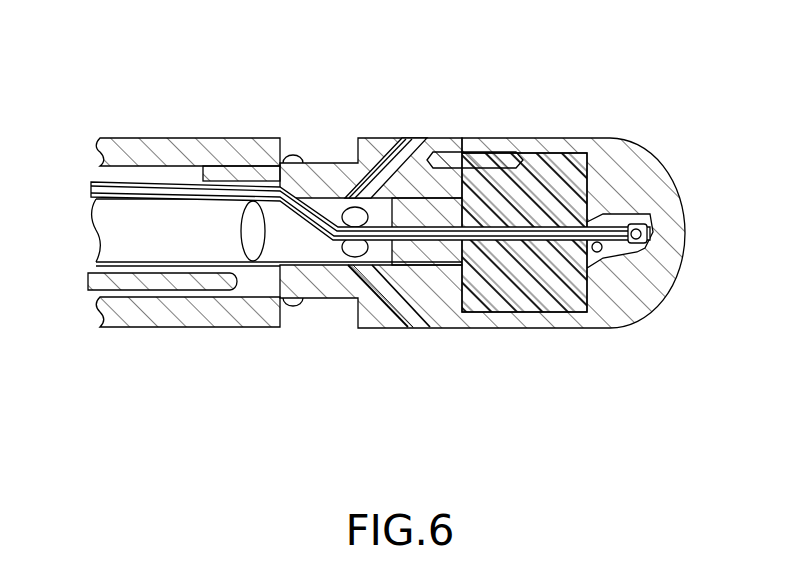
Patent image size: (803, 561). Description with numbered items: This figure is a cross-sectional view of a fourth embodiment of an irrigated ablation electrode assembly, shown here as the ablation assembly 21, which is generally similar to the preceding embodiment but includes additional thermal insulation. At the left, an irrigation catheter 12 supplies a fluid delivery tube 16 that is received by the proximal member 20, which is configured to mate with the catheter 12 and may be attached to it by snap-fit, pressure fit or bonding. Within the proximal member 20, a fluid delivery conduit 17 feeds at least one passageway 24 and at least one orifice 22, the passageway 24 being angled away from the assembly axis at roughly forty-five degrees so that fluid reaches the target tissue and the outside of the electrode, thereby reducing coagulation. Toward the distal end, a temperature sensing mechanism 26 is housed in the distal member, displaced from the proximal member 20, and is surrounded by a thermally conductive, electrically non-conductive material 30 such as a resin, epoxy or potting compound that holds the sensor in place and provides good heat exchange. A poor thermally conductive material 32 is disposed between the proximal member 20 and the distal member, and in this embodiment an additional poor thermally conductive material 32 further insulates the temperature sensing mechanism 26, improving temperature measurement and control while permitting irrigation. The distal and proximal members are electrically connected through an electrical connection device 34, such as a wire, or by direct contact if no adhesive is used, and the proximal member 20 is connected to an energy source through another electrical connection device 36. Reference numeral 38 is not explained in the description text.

The irrigation catheter 12 is at (207, 92).
The fluid delivery tube 16 is at (97, 207).
The fluid delivery conduit 17 is at (292, 255).
The proximal member 20 is at (378, 137).
The ablation assembly 21 is at (488, 102).
The orifice 22 is at (420, 138).
The passageway 24 is at (388, 168).
The temperature sensing mechanism 26 is at (636, 238).
The thermally conductive, electrically non-conductive material 30 is at (597, 250).
The poor thermally conductive material 32 is at (492, 288).
The electrical connection device 34 is at (441, 152).
The electrical connection device 36 is at (124, 292).
The spacer 38 is at (418, 255).